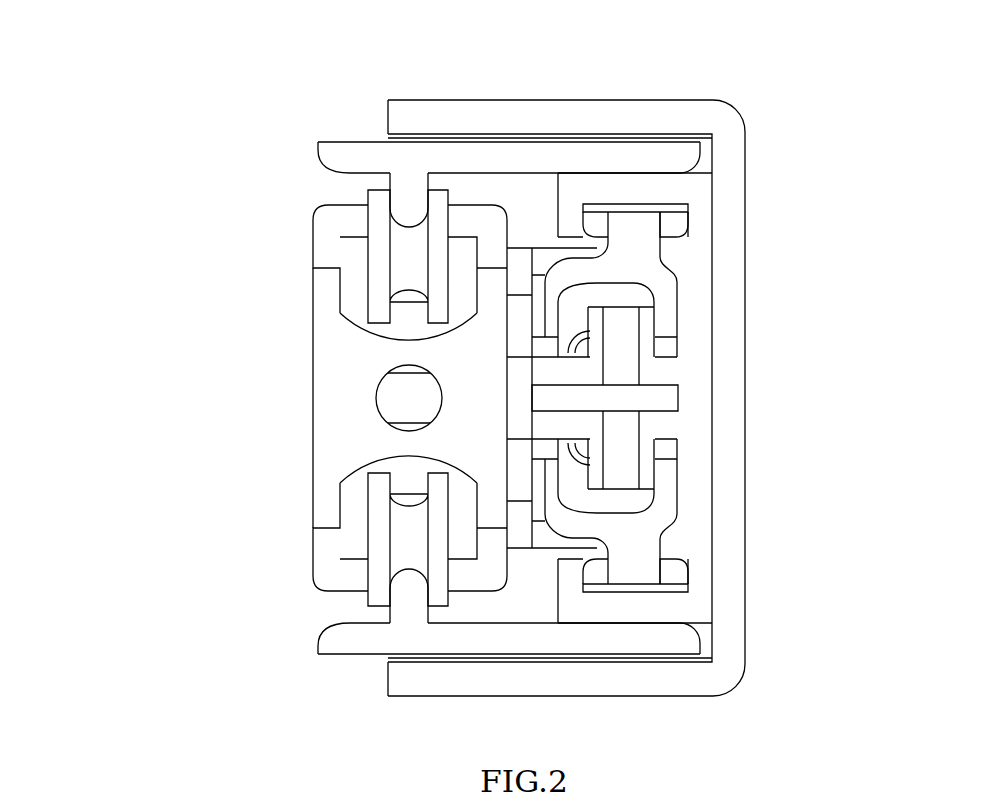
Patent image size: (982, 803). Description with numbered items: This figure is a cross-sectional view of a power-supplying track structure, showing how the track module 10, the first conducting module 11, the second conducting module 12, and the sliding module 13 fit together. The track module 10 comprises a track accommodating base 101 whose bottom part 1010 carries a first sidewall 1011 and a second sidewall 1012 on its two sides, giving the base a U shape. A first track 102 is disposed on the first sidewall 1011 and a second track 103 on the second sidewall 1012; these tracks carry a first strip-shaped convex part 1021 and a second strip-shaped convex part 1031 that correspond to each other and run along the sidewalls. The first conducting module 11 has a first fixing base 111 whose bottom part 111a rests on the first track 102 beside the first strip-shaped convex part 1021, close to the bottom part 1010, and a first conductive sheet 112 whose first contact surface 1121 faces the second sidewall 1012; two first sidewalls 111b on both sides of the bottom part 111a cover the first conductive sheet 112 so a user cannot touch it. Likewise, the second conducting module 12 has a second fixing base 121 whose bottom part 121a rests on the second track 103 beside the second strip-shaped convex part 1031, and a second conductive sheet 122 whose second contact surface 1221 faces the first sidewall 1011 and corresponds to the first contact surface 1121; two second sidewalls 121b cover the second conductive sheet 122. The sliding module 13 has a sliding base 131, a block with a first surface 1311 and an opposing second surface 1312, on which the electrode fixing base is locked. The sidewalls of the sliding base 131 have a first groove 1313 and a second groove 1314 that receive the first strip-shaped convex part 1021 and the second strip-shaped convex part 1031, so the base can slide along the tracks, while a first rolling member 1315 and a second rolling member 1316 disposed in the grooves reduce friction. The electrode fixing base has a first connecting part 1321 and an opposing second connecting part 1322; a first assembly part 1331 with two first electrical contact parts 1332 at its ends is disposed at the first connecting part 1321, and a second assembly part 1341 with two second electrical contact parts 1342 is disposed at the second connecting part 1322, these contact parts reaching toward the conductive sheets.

The track module 10 is at (303, 105).
The track accommodating base 101 is at (745, 423).
The bottom part 1010 is at (713, 457).
The first sidewall 1011 is at (437, 662).
The second sidewall 1012 is at (428, 110).
The first track 102 is at (328, 635).
The first strip-shaped convex part 1021 is at (395, 613).
The second track 103 is at (325, 160).
The second strip-shaped convex part 1031 is at (388, 177).
The first conducting module 11 is at (700, 551).
The first fixing base 111 is at (700, 597).
The bottom part 111a is at (690, 625).
The first sidewalls 111b is at (557, 583).
The first conductive sheet 112 is at (685, 587).
The first contact surface 1121 is at (675, 562).
The second conducting module 12 is at (698, 243).
The second fixing base 121 is at (698, 200).
The bottom part 121a is at (635, 170).
The second sidewalls 121b is at (555, 208).
The second conductive sheet 122 is at (700, 206).
The second contact surface 1221 is at (687, 210).
The sliding module 13 is at (260, 388).
The sliding base 131 is at (348, 443).
The first surface 1311 is at (312, 413).
The second surface 1312 is at (514, 240).
The first groove 1313 is at (337, 543).
The second groove 1314 is at (337, 300).
The first rolling member 1315 is at (377, 510).
The second rolling member 1316 is at (405, 267).
The first connecting part 1321 is at (635, 480).
The second connecting part 1322 is at (627, 325).
The first assembly part 1331 is at (657, 430).
The first electrical contact parts 1332 is at (642, 567).
The second assembly part 1341 is at (655, 358).
The second electrical contact parts 1342 is at (628, 233).